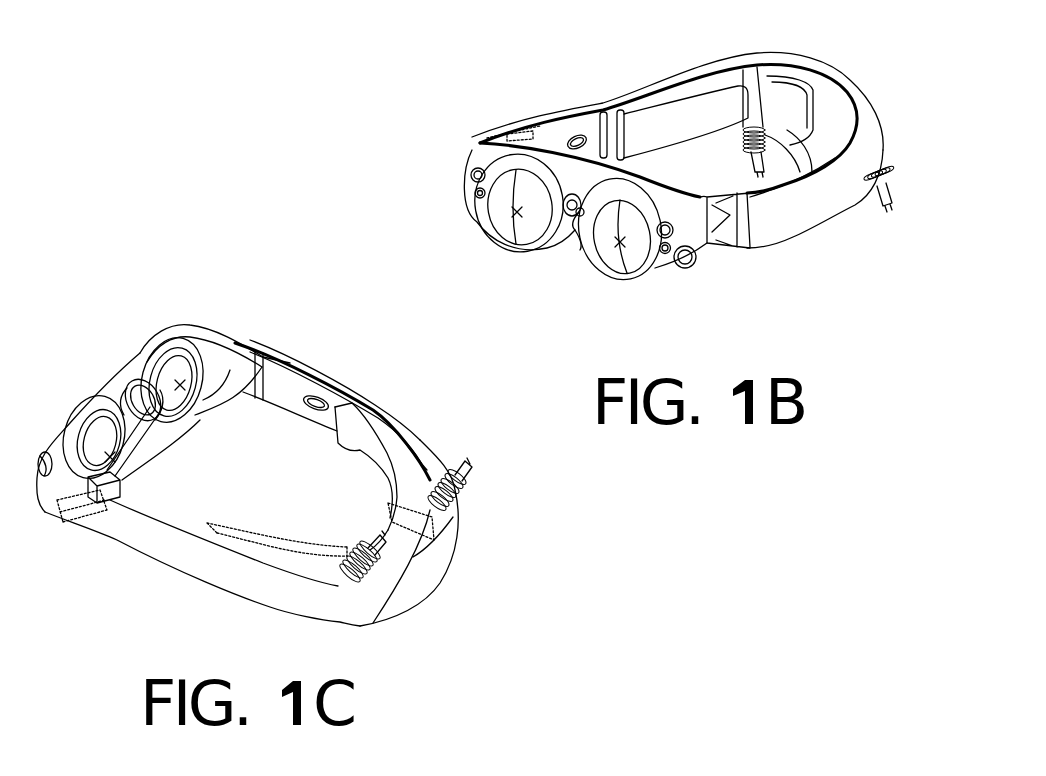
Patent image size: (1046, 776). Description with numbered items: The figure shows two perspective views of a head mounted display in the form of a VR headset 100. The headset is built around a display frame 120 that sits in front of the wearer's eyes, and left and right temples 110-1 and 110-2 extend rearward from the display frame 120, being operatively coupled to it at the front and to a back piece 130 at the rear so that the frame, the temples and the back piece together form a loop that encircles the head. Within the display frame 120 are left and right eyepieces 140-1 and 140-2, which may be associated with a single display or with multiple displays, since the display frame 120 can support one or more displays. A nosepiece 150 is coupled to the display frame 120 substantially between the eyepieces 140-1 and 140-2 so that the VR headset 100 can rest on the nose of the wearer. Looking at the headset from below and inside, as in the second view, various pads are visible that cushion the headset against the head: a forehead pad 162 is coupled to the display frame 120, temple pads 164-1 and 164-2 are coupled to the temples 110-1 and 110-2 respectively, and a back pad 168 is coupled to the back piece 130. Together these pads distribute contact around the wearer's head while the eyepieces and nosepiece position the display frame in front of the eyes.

In FIG. 1B, the VR headset 100 is at (457, 84).
In FIG. 1C, the VR headset 100 is at (393, 375).
In FIG. 1B, the left temple 110-1 is at (782, 222).
In FIG. 1C, the left temple 110-1 is at (278, 372).
In FIG. 1B, the right temple 110-2 is at (587, 123).
In FIG. 1C, the right temple 110-2 is at (153, 537).
In FIG. 1B, the display frame 120 is at (628, 175).
In FIG. 1C, the display frame 120 is at (143, 362).
In FIG. 1B, the back piece 130 is at (833, 70).
In FIG. 1C, the back piece 130 is at (433, 548).
In FIG. 1B, the left eyepiece 140-1 is at (642, 253).
In FIG. 1C, the left eyepiece 140-1 is at (177, 387).
In FIG. 1B, the right eyepiece 140-2 is at (500, 213).
In FIG. 1C, the right eyepiece 140-2 is at (102, 443).
In FIG. 1B, the nosepiece 150 is at (575, 225).
In FIG. 1C, the nosepiece 150 is at (127, 388).
In FIG. 1C, the forehead pad 162 is at (158, 432).
In FIG. 1C, the temple pad 164-1 is at (357, 448).
In FIG. 1C, the temple pad 164-2 is at (307, 553).
In FIG. 1C, the back pad 168 is at (403, 533).